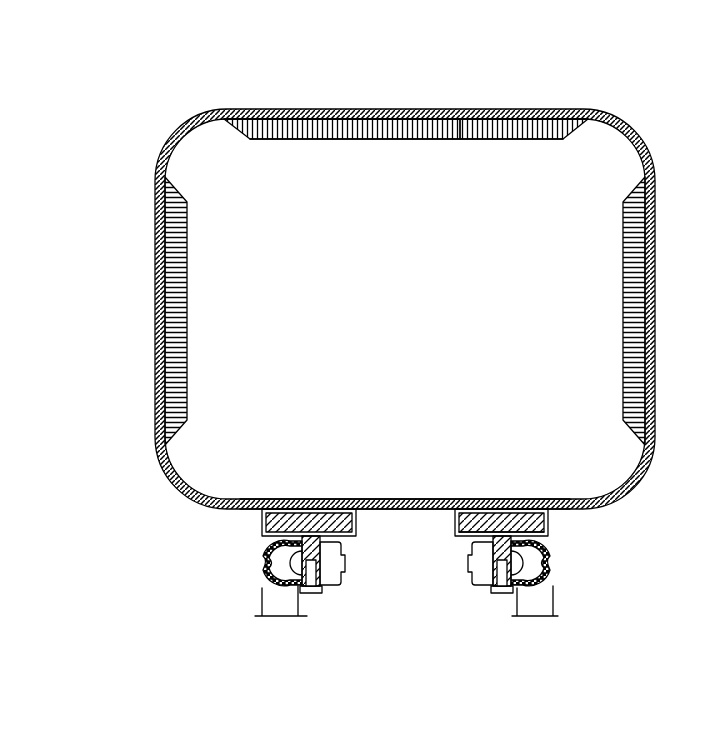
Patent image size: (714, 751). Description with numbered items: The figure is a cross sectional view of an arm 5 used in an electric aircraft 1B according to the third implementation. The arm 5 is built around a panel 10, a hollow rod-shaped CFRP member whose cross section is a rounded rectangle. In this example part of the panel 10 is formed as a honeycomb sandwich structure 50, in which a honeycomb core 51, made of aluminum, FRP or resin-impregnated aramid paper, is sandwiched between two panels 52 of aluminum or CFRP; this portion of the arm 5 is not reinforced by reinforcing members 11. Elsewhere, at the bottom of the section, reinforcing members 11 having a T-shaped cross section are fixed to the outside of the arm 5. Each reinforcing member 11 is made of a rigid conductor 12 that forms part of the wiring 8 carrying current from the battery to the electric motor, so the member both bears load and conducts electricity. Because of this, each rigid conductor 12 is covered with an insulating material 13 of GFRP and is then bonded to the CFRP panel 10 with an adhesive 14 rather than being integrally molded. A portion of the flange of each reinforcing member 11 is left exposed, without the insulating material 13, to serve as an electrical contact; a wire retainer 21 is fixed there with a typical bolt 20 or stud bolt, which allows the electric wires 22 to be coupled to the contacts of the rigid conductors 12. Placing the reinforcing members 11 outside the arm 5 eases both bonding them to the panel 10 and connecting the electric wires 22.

The electric aircraft 1B is at (118, 188).
The arm 5 is at (545, 100).
The panel 10 is at (398, 500).
The reinforcing member 11 is at (456, 529).
The rigid conductor 12 is at (550, 529).
The insulating material 13 is at (460, 538).
The adhesive 14 is at (556, 509).
The bolt 20 is at (315, 588).
The wire retainer 21 is at (268, 553).
The electric wire 22 is at (268, 605).
The wiring 8 is at (493, 603).
The honeycomb sandwich structure 50 is at (513, 60).
The honeycomb core 51 is at (423, 114).
The panel 52 is at (499, 114).